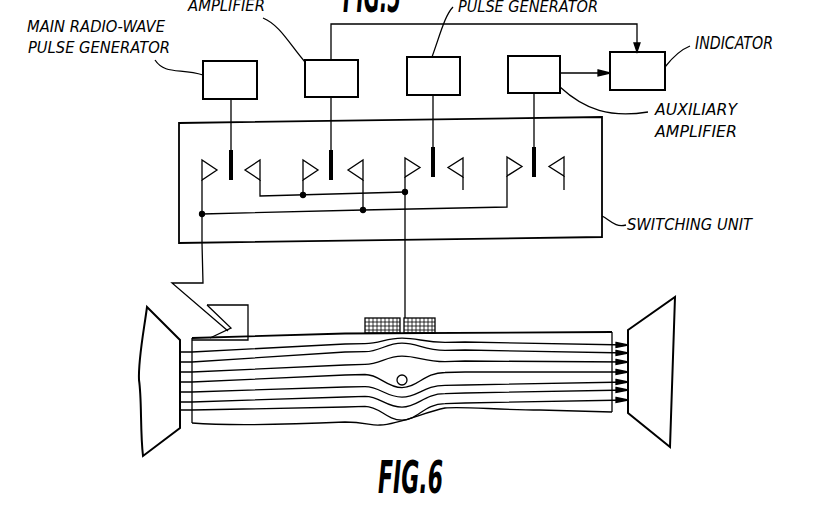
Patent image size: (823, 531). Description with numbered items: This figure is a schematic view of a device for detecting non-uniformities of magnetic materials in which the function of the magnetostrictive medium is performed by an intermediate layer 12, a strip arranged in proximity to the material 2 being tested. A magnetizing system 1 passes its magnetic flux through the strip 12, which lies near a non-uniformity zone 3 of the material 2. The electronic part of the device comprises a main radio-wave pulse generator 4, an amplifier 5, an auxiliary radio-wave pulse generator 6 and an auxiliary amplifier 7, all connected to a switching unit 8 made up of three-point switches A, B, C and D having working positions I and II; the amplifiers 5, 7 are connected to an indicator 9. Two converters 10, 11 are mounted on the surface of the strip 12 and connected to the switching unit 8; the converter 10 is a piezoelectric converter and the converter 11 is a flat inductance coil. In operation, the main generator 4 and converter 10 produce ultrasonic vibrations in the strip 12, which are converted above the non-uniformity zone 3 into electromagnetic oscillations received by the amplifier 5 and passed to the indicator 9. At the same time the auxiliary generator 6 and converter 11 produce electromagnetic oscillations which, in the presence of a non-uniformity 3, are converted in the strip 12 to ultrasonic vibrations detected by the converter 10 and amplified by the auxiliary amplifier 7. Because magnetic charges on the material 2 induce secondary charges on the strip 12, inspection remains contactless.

The magnetizing system 1 is at (156, 322).
The material being tested 2 is at (311, 362).
The non-uniformity zone 3 is at (408, 377).
The main radio-wave pulse generator 4 is at (230, 91).
The amplifier 5 is at (472, 72).
The auxiliary radio-wave pulse generator 6 is at (433, 88).
The auxiliary amplifier 7 is at (559, 87).
The switching unit 8 is at (600, 175).
The indicator 9 is at (637, 71).
The converter 10 is at (243, 322).
The converter 11 is at (435, 323).
The intermediate layer 12 is at (525, 338).